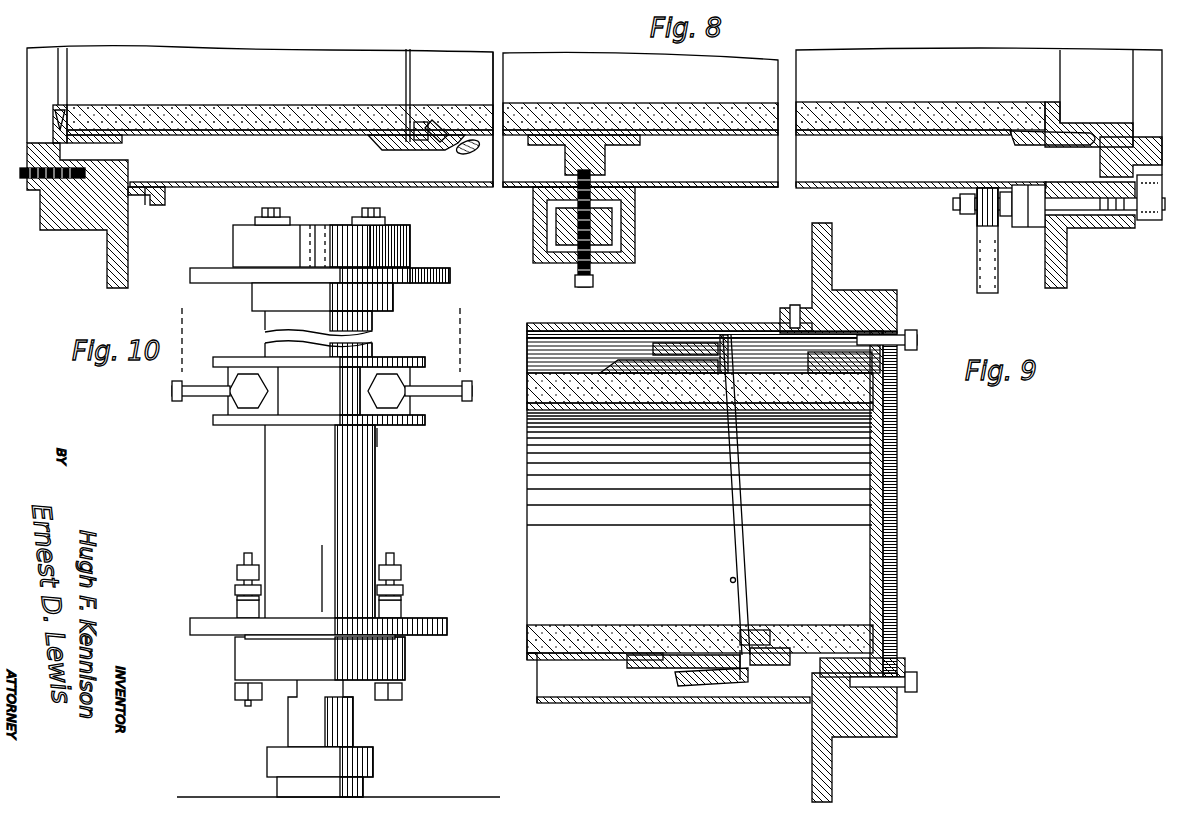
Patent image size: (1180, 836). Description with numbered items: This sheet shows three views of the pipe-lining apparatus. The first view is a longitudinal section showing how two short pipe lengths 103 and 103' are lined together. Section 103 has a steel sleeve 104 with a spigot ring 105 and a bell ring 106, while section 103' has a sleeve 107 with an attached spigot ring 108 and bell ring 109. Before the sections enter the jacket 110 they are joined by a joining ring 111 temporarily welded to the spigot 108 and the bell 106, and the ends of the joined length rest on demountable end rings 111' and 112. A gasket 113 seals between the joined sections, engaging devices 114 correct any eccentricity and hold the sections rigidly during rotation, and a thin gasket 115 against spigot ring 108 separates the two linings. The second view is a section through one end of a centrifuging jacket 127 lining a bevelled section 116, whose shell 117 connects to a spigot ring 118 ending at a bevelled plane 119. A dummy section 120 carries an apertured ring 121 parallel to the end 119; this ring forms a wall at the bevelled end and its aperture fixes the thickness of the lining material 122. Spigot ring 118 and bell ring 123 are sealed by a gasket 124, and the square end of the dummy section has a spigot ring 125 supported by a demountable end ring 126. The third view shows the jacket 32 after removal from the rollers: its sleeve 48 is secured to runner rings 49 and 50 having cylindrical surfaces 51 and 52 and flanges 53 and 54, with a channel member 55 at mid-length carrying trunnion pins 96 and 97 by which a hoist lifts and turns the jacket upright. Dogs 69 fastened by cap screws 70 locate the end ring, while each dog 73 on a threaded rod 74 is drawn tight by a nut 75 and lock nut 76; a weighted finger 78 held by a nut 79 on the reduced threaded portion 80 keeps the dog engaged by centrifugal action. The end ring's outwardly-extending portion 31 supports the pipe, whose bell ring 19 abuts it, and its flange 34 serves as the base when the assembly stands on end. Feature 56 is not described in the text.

In FIG. 8, the short pipe section 103 is at (256, 160).
In FIG. 8, the short pipe section 103' is at (979, 162).
In FIG. 8, the steel sleeve 104 is at (246, 136).
In FIG. 8, the spigot ring 105 is at (122, 140).
In FIG. 8, the bell ring 106 is at (410, 150).
In FIG. 8, the sleeve 107 is at (688, 137).
In FIG. 8, the spigot ring 108 is at (440, 125).
In FIG. 8, the bell ring 109 is at (1025, 143).
In FIG. 8, the jacket 110 is at (466, 188).
In FIG. 8, the joining ring 111 is at (460, 155).
In FIG. 8, the demountable end ring 111' is at (85, 102).
In FIG. 8, the demountable end ring 112 is at (1100, 135).
In FIG. 8, the gasket 113 is at (425, 120).
In FIG. 8, the engaging devices 114 is at (618, 260).
In FIG. 8, the thin gasket 115 is at (404, 68).
In FIG. 9, the bevelled pipe section 116 is at (580, 572).
In FIG. 9, the shell 117 is at (535, 660).
In FIG. 9, the spigot ring 118 is at (665, 668).
In FIG. 9, the terminal end 119 is at (736, 580).
In FIG. 9, the dummy section 120 is at (780, 665).
In FIG. 9, the apertured ring 121 is at (743, 630).
In FIG. 9, the lining material 122 is at (607, 625).
In FIG. 9, the bell ring 123 is at (712, 682).
In FIG. 9, the gasket 124 is at (735, 672).
In FIG. 9, the spigot ring 125 is at (860, 655).
In FIG. 9, the demountable end ring 126 is at (905, 660).
In FIG. 9, the jacket 127 is at (580, 704).
In FIG. 10, the bell ring 19 is at (353, 730).
In FIG. 10, the outwardly-extending portion 31 is at (373, 758).
In FIG. 10, the jacket 32 is at (387, 471).
In FIG. 10, the axially-extending flange 34 is at (363, 785).
In FIG. 10, the sleeve 48 is at (265, 325).
In FIG. 10, the runner ring 49 is at (233, 243).
In FIG. 10, the runner ring 50 is at (235, 659).
In FIG. 10, the cylindrical surface 51 is at (410, 243).
In FIG. 10, the cylindrical surface 52 is at (405, 660).
In FIG. 10, the flange 53 is at (450, 275).
In FIG. 10, the flange 54 is at (447, 626).
In FIG. 10, the channel member 55 is at (298, 425).
In FIG. 10, the pin 56 is at (379, 437).
In FIG. 10, the dogs 69 is at (352, 218).
In FIG. 10, the cap screws 70 is at (262, 212).
In FIG. 10, the dog 73 is at (235, 692).
In FIG. 8, the threaded rod 74 is at (1107, 228).
In FIG. 10, the threaded rod 74 is at (401, 598).
In FIG. 8, the nut 75 is at (1028, 227).
In FIG. 10, the nut 75 is at (237, 610).
In FIG. 8, the lock nut 76 is at (1012, 228).
In FIG. 10, the lock nut 76 is at (403, 590).
In FIG. 8, the finger member 78 is at (977, 257).
In FIG. 10, the finger member 78 is at (237, 570).
In FIG. 8, the nut 79 is at (962, 212).
In FIG. 10, the nut 79 is at (246, 553).
In FIG. 8, the reduced threaded portion 80 is at (953, 203).
In FIG. 10, the reduced threaded portion 80 is at (390, 553).
In FIG. 10, the trunnion pin 96 is at (172, 391).
In FIG. 10, the trunnion pin 97 is at (468, 382).